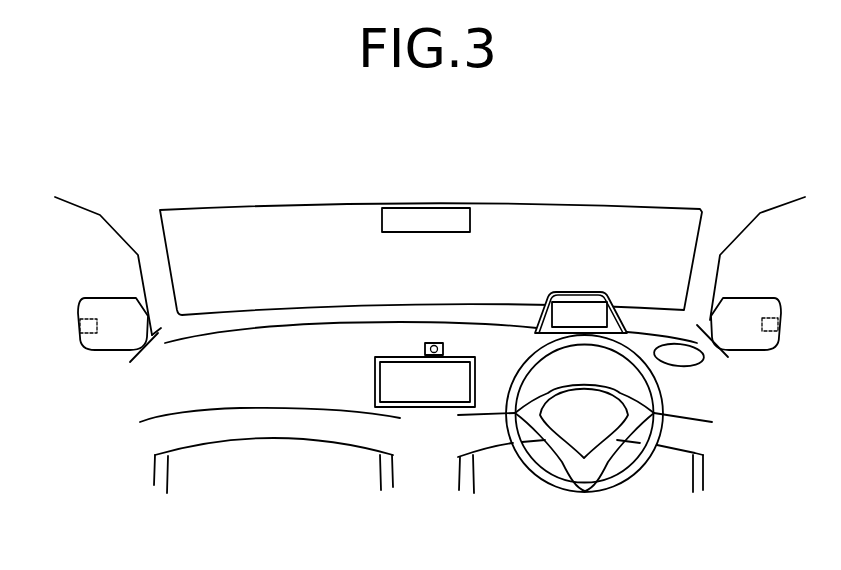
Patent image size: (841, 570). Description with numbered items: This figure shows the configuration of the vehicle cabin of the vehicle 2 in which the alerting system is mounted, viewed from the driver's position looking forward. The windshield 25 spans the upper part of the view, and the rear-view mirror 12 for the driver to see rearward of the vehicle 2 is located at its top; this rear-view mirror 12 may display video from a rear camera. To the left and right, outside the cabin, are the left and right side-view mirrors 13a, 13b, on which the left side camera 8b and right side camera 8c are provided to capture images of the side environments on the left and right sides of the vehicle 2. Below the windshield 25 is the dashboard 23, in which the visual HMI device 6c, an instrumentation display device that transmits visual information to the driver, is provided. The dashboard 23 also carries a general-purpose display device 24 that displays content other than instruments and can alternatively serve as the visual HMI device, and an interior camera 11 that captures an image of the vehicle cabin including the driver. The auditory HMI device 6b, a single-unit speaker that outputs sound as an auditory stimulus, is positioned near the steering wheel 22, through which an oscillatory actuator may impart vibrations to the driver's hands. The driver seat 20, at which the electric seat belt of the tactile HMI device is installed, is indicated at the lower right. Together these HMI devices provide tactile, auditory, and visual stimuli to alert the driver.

The vehicle 2 is at (265, 146).
The auditory HMI device 6b is at (702, 359).
The visual HMI device 6c is at (582, 300).
The left side camera 8b is at (82, 347).
The right side camera 8c is at (785, 343).
The interior camera 11 is at (425, 348).
The rear-view mirror 12 is at (432, 217).
The left side-view mirror 13a is at (92, 308).
The right side-view mirror 13b is at (753, 305).
The driver seat 20 is at (678, 463).
The steering wheel 22 is at (538, 472).
The dashboard 23 is at (293, 342).
The general-purpose display device 24 is at (388, 388).
The windshield 25 is at (672, 220).